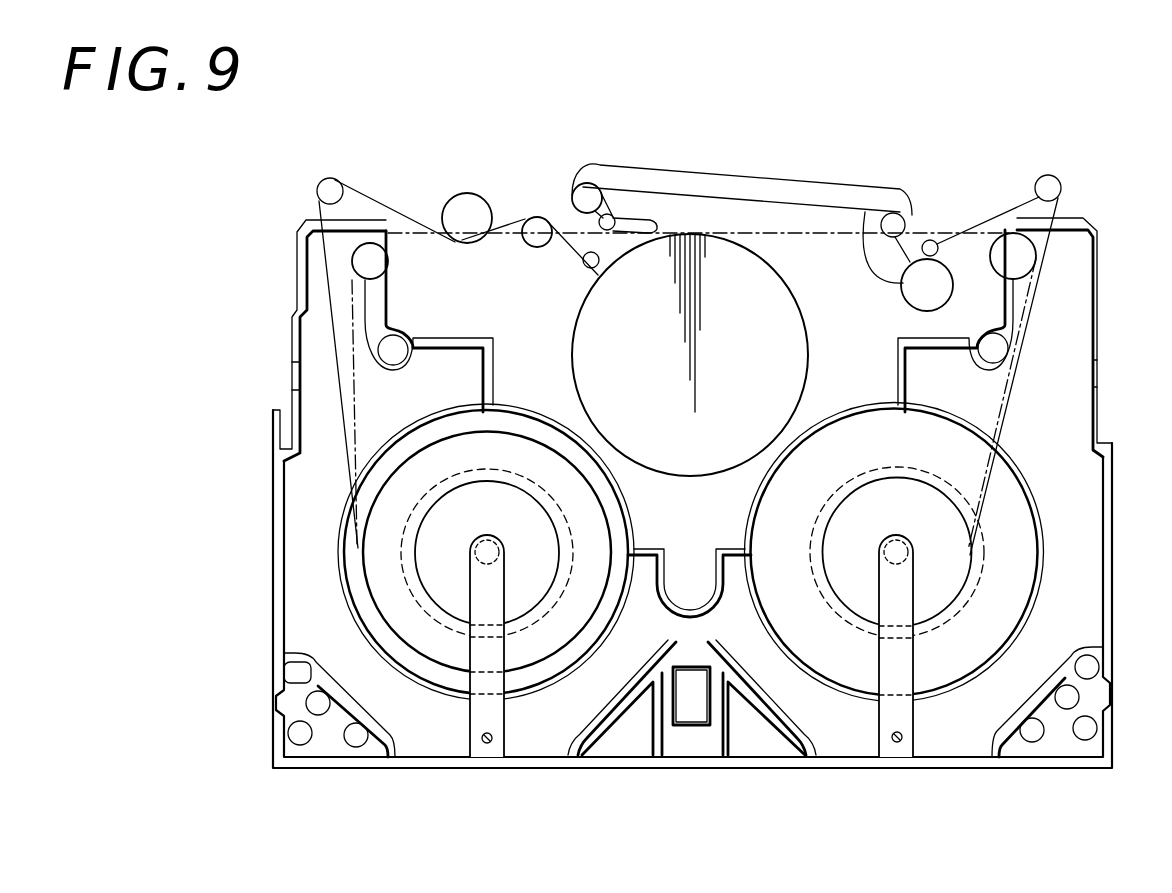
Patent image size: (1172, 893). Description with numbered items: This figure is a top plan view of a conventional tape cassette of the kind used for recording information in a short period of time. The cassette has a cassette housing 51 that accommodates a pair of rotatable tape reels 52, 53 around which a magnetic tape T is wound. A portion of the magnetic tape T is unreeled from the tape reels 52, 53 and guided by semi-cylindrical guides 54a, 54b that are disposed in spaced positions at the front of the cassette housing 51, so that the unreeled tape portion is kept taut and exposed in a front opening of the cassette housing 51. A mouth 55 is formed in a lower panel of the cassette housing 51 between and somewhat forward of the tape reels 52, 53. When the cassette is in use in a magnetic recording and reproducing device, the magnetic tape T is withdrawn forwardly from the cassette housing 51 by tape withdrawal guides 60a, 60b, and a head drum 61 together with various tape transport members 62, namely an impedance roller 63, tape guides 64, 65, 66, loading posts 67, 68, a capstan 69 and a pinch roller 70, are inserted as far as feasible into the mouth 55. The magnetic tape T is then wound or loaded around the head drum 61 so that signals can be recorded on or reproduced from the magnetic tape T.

The cassette housing 51 is at (636, 768).
The tape reel 52 is at (443, 675).
The tape reel 53 is at (953, 665).
The semi-cylindrical guide 54a is at (377, 257).
The semi-cylindrical guide 54b is at (1014, 232).
The mouth 55 is at (827, 326).
The tape withdrawal guide 60a is at (332, 178).
The tape withdrawal guide 60b is at (1061, 181).
The head drum 61 is at (722, 238).
The tape transport members 62 is at (562, 166).
The impedance roller 63 is at (468, 193).
The tape guide 64 is at (536, 217).
The tape guide 65 is at (583, 263).
The tape guide 66 is at (901, 216).
The loading post 67 is at (640, 218).
The loading post 68 is at (592, 184).
The capstan 69 is at (934, 243).
The pinch roller 70 is at (903, 280).
The magnetic tape T is at (380, 562).